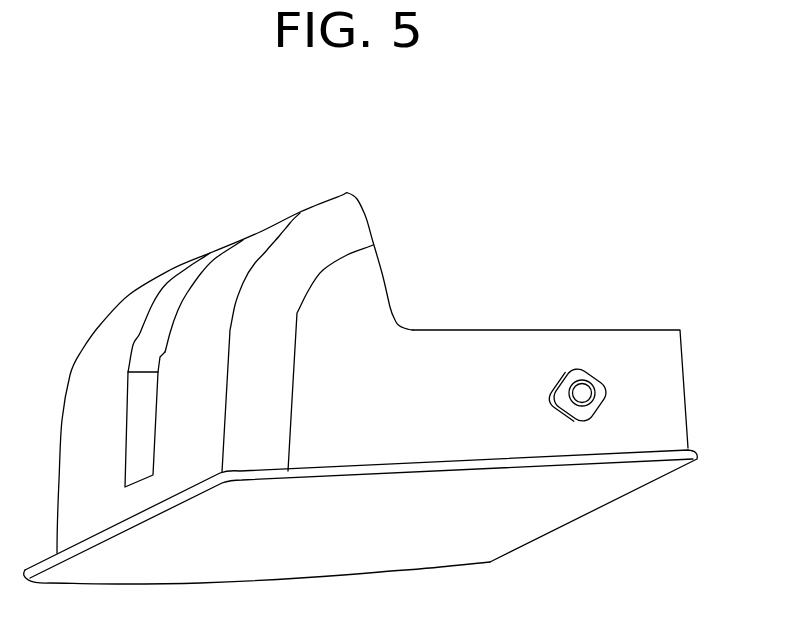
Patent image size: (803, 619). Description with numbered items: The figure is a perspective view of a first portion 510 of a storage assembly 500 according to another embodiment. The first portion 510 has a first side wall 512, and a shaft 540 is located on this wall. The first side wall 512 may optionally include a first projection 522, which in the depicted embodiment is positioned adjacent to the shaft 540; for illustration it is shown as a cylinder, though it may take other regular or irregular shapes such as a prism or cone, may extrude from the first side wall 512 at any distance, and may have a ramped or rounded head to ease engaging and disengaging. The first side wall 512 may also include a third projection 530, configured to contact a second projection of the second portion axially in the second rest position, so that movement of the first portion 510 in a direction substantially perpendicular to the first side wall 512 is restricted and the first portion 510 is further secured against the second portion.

The storage assembly 500 is at (529, 152).
The first portion 510 is at (265, 222).
The first side wall 512 is at (483, 347).
The first projection 522 is at (602, 415).
The third projection 530 is at (602, 376).
The shaft 540 is at (578, 371).